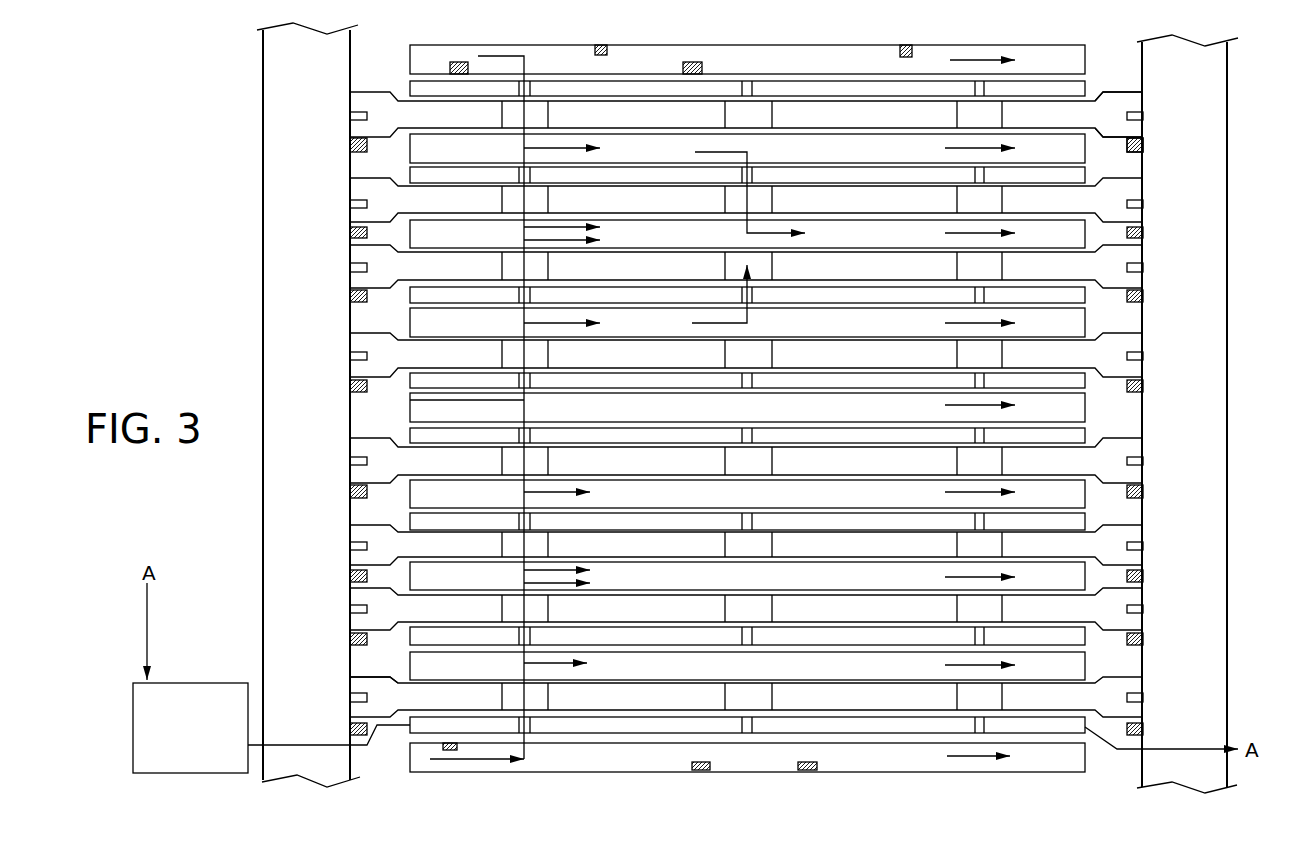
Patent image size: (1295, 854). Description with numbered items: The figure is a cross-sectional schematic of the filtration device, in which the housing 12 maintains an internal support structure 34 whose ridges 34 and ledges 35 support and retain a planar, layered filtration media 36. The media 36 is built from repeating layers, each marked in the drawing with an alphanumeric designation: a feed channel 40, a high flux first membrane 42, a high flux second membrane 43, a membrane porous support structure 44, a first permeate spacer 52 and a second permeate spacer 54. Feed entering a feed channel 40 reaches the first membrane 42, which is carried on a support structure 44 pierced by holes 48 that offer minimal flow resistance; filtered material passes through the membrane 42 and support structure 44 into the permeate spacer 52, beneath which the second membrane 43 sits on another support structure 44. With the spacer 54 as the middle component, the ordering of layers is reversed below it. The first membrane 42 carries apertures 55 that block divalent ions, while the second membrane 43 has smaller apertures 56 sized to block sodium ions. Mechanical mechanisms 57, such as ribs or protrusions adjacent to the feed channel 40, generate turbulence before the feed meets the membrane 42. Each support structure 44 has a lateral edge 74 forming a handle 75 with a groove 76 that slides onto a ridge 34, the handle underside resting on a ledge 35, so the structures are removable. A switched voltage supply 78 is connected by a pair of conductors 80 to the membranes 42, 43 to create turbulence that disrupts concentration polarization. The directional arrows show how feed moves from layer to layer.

The housing 12 is at (277, 270).
The internal support structure 34 is at (1130, 117).
The ledge 35 is at (1142, 152).
The filtration media 36 is at (198, 47).
The feed channel 40 is at (737, 62).
The high flux first membrane 42 is at (742, 84).
The high flux second membrane 43 is at (410, 292).
The membrane porous support structure 44 is at (830, 97).
The holes 48 is at (530, 82).
The first permeate spacer 52 is at (858, 145).
The second permeate spacer 54 is at (417, 232).
The apertures 55 is at (752, 85).
The apertures 56 is at (985, 180).
The mechanical mechanism 57 is at (462, 62).
The lateral edge 74 is at (1093, 98).
The handle 75 is at (1122, 97).
The groove 76 is at (1130, 127).
The switched voltage supply 78 is at (228, 773).
The conductors 80 is at (312, 745).